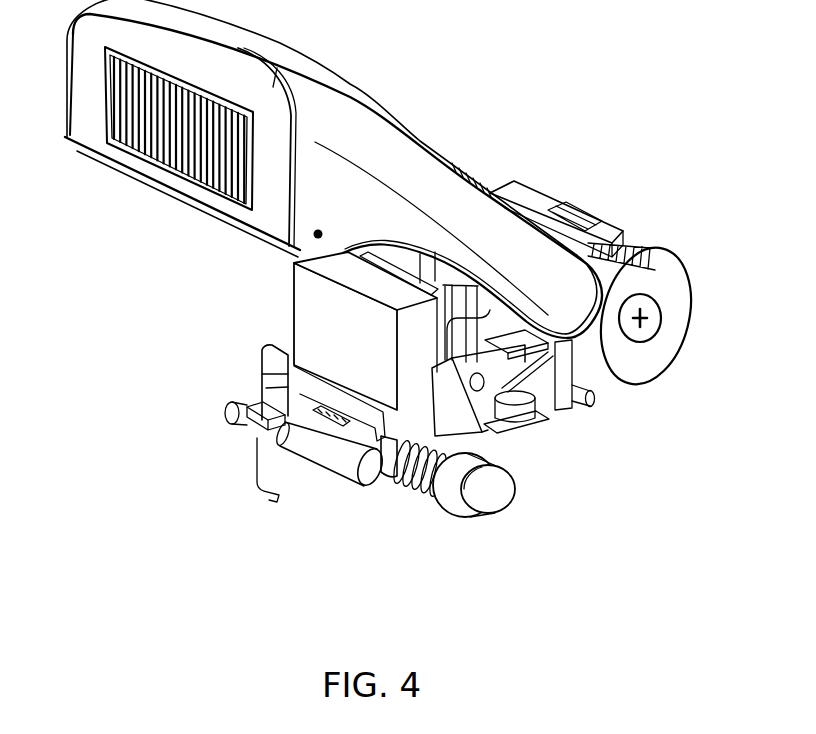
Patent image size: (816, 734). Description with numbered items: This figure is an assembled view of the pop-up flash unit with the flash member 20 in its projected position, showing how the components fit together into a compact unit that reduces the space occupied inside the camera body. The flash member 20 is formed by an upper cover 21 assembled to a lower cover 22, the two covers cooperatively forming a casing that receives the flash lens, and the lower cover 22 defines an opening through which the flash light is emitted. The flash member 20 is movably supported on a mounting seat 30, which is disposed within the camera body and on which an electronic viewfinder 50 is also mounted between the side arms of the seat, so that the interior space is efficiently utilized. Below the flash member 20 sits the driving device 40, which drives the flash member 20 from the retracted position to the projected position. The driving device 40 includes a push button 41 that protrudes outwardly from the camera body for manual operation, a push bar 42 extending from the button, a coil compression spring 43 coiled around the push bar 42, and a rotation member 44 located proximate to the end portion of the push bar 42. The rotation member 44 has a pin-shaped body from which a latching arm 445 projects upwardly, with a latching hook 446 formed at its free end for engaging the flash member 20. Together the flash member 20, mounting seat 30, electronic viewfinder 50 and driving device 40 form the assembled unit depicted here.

The flash member 20 is at (380, 140).
The upper cover 21 is at (322, 108).
The lower cover 22 is at (268, 204).
The mounting seat 30 is at (483, 437).
The driving device 40 is at (505, 582).
The push button 41 is at (493, 487).
The push bar 42 is at (392, 452).
The coil compression spring 43 is at (422, 478).
The rotation member 44 is at (313, 447).
The electronic viewfinder 50 is at (335, 332).
The latching arm 445 is at (263, 388).
The latching hook 446 is at (262, 372).